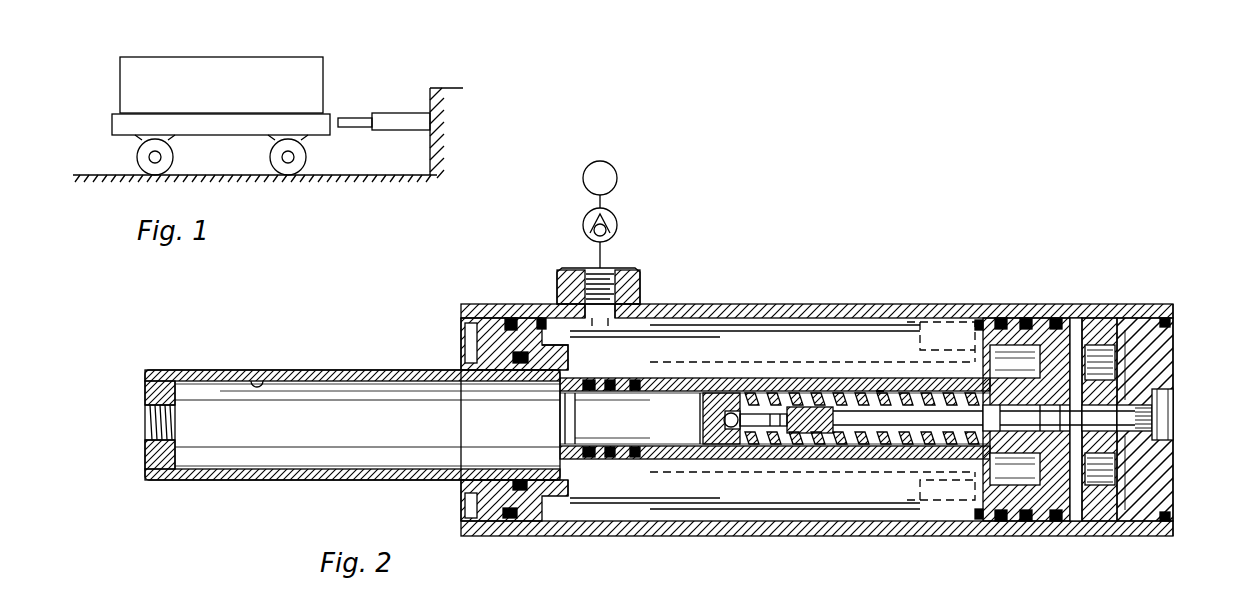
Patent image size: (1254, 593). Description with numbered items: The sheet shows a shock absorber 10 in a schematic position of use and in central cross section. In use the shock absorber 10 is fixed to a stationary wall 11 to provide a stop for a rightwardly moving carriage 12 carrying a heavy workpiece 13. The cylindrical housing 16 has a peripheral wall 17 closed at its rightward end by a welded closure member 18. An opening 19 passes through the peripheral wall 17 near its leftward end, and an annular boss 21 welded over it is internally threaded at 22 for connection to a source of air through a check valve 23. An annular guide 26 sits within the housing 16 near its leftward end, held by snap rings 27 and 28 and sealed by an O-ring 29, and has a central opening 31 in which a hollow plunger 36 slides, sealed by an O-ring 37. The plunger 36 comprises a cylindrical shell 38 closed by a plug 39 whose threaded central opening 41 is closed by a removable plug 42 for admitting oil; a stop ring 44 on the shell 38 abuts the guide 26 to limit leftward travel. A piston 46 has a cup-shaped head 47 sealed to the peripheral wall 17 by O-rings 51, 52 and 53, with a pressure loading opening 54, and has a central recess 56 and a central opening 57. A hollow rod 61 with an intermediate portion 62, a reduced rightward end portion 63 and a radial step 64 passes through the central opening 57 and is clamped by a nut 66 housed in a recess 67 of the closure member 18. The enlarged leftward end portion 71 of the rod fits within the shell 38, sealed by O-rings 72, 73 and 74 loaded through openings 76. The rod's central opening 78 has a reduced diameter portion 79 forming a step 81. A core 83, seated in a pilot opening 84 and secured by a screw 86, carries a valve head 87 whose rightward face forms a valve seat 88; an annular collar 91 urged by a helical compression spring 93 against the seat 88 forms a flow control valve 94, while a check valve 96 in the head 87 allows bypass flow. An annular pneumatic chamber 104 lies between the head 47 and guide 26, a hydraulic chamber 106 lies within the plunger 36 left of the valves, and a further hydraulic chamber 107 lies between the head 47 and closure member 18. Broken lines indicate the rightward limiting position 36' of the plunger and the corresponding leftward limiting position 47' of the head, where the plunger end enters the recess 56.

In FIG. 1, the shock absorber 10 is at (410, 108).
In FIG. 2, the shock absorber 10 is at (885, 228).
In FIG. 1, the stationary wall 11 is at (430, 153).
In FIG. 1, the carriage 12 is at (126, 158).
In FIG. 1, the workpiece 13 is at (132, 82).
In FIG. 2, the housing 16 is at (808, 538).
In FIG. 2, the peripheral wall 17 is at (905, 304).
In FIG. 2, the closure member 18 is at (1125, 304).
In FIG. 2, the opening 19 is at (603, 317).
In FIG. 2, the annular boss 21 is at (640, 272).
In FIG. 2, the internal threads 22 is at (583, 270).
In FIG. 2, the check valve 23 is at (618, 220).
In FIG. 2, the annular guide 26 is at (482, 523).
In FIG. 2, the snap ring 27 is at (460, 327).
In FIG. 2, the snap ring 28 is at (540, 318).
In FIG. 2, the O-ring 29 is at (505, 318).
In FIG. 2, the central opening 31 is at (432, 370).
In FIG. 2, the plunger 36 is at (352, 445).
In FIG. 2, the rightward limiting position of plunger 36' is at (812, 405).
In FIG. 2, the O-ring 37 is at (522, 385).
In FIG. 2, the cylindrical shell 38 is at (357, 481).
In FIG. 2, the plug 39 is at (168, 370).
In FIG. 2, the threaded central opening 41 is at (150, 415).
In FIG. 2, the removable plug 42 is at (152, 432).
In FIG. 2, the stop ring 44 is at (567, 498).
In FIG. 2, the piston 46 is at (977, 492).
In FIG. 2, the piston head 47 is at (1026, 442).
In FIG. 2, the leftward limiting position of piston head 47' is at (877, 280).
In FIG. 2, the O-ring 51 is at (1006, 318).
In FIG. 2, the O-ring 52 is at (1023, 318).
In FIG. 2, the O-ring 53 is at (1058, 318).
In FIG. 2, the pressure loading opening 54 is at (975, 318).
In FIG. 2, the central recess 56 is at (920, 337).
In FIG. 2, the central opening 57 is at (1015, 361).
In FIG. 2, the hollow rod 61 is at (812, 460).
In FIG. 2, the intermediate portion 62 is at (880, 452).
In FIG. 2, the rightward end portion 63 is at (1067, 417).
In FIG. 2, the radial step 64 is at (1047, 418).
In FIG. 2, the nut 66 is at (1108, 378).
In FIG. 2, the recess 67 is at (1090, 492).
In FIG. 2, the leftward end portion 71 is at (607, 393).
In FIG. 2, the O-ring 72 is at (566, 393).
In FIG. 2, the O-ring 73 is at (603, 378).
In FIG. 2, the O-ring 74 is at (648, 378).
In FIG. 2, the pressure loading openings 76 is at (558, 390).
In FIG. 2, the central opening 78 is at (577, 440).
In FIG. 2, the reduced diameter portion 79 is at (1015, 469).
In FIG. 2, the step 81 is at (1004, 418).
In FIG. 2, the core 83 is at (916, 417).
In FIG. 2, the pilot opening 84 is at (1135, 400).
In FIG. 2, the screw 86 is at (1176, 415).
In FIG. 2, the valve head 87 is at (710, 395).
In FIG. 2, the valve seat 88 is at (753, 397).
In FIG. 2, the annular collar 91 is at (750, 447).
In FIG. 2, the helical compression spring 93 is at (880, 390).
In FIG. 2, the flow control valve 94 is at (767, 462).
In FIG. 2, the check valve 96 is at (697, 422).
In FIG. 2, the annular pneumatic chamber 104 is at (828, 318).
In FIG. 2, the hydraulic chamber 106 is at (252, 380).
In FIG. 2, the hydraulic chamber 107 is at (1120, 330).